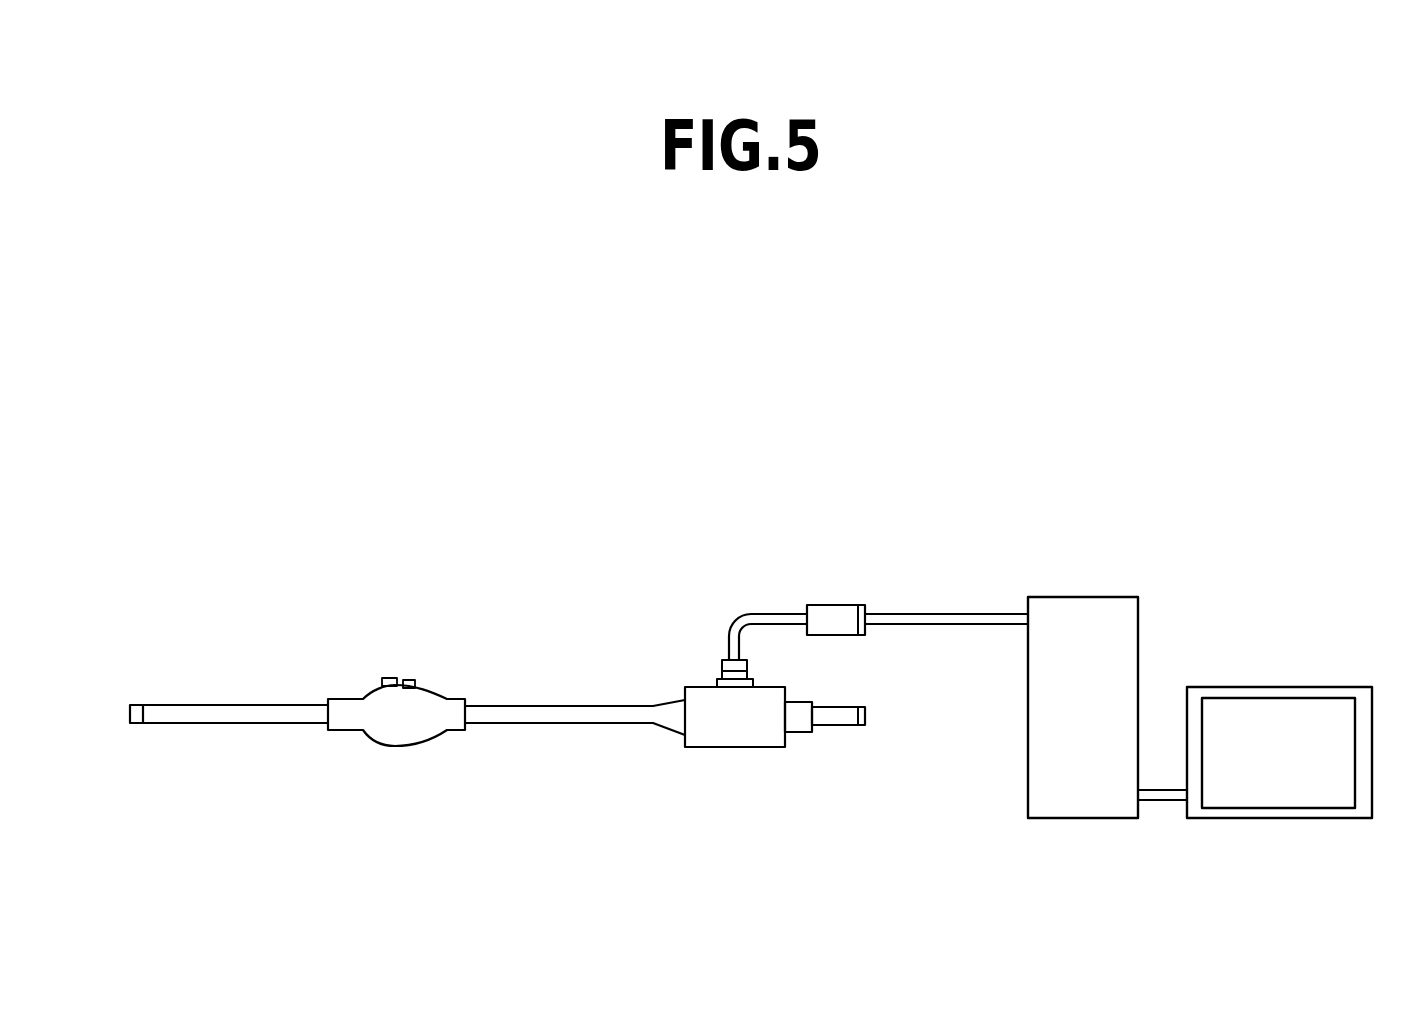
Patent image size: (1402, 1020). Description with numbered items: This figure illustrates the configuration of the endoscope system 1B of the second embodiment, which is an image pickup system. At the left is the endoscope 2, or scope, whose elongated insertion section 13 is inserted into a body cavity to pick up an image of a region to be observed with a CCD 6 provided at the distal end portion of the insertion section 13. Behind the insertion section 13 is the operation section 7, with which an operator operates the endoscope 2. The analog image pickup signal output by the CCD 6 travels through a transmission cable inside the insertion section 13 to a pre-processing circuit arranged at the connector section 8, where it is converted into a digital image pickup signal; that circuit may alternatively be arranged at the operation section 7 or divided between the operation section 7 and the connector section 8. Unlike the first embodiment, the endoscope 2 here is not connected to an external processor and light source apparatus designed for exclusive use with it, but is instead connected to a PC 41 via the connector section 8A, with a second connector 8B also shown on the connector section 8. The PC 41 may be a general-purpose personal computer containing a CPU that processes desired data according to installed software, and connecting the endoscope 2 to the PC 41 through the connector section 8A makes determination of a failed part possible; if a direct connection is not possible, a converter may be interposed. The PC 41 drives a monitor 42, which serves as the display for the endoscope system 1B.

The endoscope system 1B is at (1199, 430).
The endoscope 2 is at (112, 466).
The CCD 6 is at (135, 730).
The operation section 7 is at (369, 690).
The connector section 8 is at (678, 622).
The connector section 8A is at (835, 604).
The light guide connector 8B is at (838, 730).
The insertion section 13 is at (265, 725).
The PC 41 is at (1081, 597).
The monitor 42 is at (1279, 686).